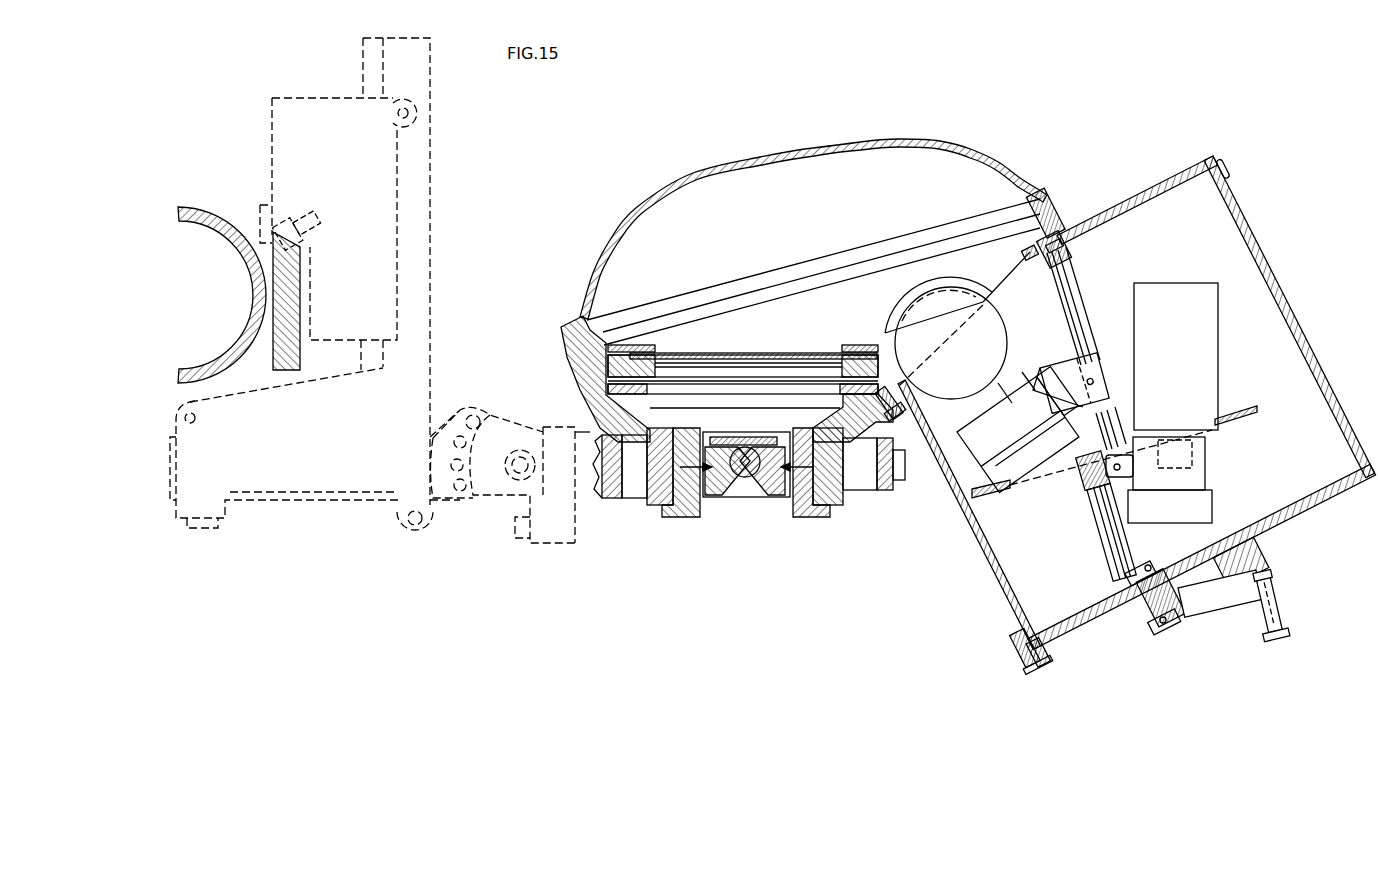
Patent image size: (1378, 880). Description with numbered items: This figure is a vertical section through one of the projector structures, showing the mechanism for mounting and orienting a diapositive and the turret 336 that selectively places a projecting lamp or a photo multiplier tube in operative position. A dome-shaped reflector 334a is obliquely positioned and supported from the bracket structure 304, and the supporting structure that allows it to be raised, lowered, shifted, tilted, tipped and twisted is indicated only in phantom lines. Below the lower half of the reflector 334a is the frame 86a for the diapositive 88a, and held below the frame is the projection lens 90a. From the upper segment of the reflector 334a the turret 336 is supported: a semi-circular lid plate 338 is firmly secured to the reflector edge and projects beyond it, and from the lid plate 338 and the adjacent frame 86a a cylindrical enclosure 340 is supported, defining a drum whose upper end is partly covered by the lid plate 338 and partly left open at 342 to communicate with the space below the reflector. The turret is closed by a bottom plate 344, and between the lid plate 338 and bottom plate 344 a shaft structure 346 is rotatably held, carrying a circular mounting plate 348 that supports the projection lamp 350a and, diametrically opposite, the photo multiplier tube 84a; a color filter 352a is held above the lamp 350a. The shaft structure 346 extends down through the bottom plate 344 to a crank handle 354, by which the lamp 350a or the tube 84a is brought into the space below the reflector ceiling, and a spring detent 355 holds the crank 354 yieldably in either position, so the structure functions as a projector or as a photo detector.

The bracket structure 304 is at (228, 186).
The dome-shaped reflector 334a is at (902, 140).
The color filter 352a is at (922, 294).
The open portion of drum upper end 342 is at (991, 276).
The projection lamp 350a is at (1000, 348).
The shaft structure 346 is at (1077, 300).
The semi-circular lid plate 338 is at (1163, 170).
The turret 336 is at (1105, 399).
The cylindrical enclosure 340 is at (1333, 345).
The photo multiplier tube 84a is at (1210, 340).
The circular mounting plate 348 is at (1245, 428).
The bottom plate 344 is at (1317, 521).
The spring detent 355 is at (1280, 633).
The crank handle 354 is at (1213, 607).
The diapositive 88a is at (733, 354).
The frame 86a is at (603, 379).
The projection lens 90a is at (743, 478).